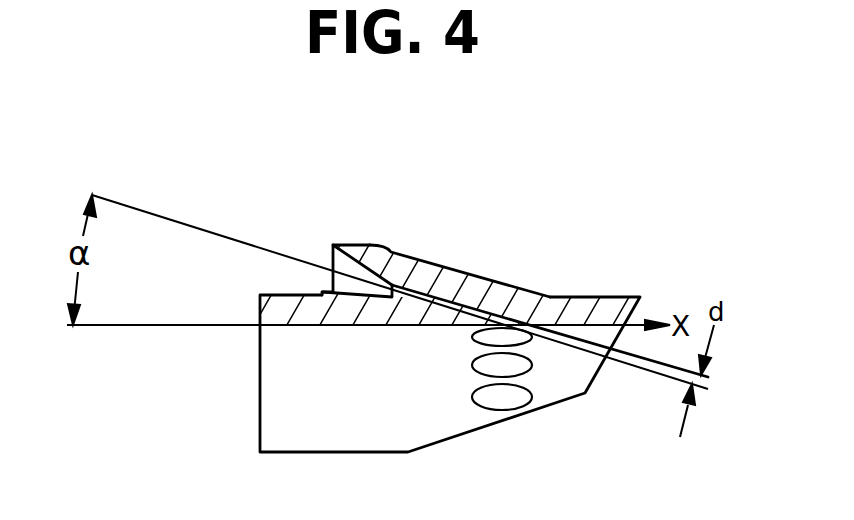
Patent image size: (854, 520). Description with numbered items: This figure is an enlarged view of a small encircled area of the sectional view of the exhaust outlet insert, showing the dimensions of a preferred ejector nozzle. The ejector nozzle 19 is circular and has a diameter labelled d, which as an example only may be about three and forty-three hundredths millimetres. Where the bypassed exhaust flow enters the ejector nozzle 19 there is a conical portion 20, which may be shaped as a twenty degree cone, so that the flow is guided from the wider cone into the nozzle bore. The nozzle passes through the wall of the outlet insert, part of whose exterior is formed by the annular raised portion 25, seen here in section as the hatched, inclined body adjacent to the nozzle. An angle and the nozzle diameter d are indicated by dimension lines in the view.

The ejector nozzle 19 is at (333, 247).
The conical portion 20 is at (390, 250).
The annular raised portion 25 is at (477, 274).